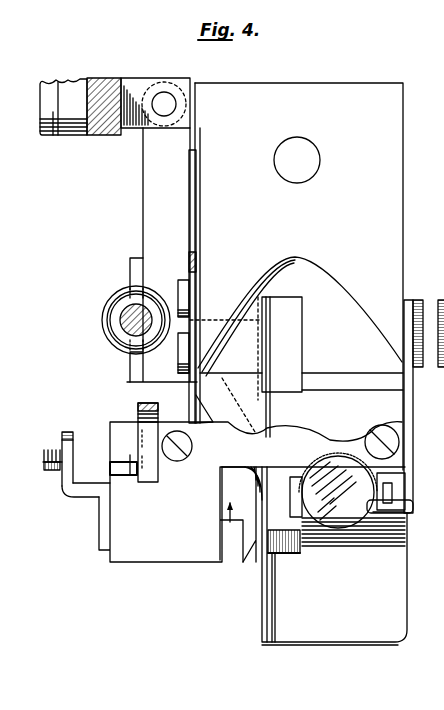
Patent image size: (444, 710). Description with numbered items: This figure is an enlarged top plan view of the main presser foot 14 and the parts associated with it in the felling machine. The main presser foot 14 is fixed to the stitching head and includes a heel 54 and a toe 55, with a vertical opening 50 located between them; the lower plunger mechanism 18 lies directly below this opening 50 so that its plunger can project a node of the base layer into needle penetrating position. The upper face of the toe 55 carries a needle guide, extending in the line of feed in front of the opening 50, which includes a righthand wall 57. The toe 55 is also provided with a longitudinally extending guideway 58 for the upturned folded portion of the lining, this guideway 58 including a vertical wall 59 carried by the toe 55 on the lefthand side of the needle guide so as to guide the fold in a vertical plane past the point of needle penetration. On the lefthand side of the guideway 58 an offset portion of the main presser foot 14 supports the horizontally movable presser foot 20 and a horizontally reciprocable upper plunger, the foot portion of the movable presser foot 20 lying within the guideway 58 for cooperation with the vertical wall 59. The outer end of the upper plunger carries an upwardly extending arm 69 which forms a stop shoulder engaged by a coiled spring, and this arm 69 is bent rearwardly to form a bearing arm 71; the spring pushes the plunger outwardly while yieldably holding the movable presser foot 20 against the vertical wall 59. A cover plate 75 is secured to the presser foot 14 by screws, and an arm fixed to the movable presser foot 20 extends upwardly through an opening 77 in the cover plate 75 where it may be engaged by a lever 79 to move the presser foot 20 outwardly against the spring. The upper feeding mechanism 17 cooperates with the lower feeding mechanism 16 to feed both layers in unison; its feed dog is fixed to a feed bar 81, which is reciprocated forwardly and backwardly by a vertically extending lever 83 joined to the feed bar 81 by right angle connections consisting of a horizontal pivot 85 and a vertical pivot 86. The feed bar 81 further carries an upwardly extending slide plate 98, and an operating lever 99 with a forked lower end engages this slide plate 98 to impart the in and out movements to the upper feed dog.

The main presser foot 14 is at (228, 187).
The lower feeding mechanism 16 is at (376, 432).
The upper feeding mechanism 17 is at (113, 294).
The lower plunger mechanism 18 is at (128, 466).
The movable presser foot 20 is at (232, 522).
The vertical opening 50 is at (285, 520).
The heel 54 is at (386, 161).
The toe 55 is at (384, 630).
The righthand wall 57 is at (286, 545).
The guideway 58 is at (254, 562).
The vertical wall 59 is at (262, 633).
The upwardly extending arm 69 is at (98, 494).
The bearing arm 71 is at (110, 423).
The cover plate 75 is at (147, 545).
The opening 77 is at (139, 475).
The lever 79 is at (181, 421).
The feed bar 81 is at (151, 227).
The vertically extending lever 83 is at (108, 79).
The horizontal pivot 85 is at (54, 113).
The vertical pivot 86 is at (166, 100).
The slide plate 98 is at (134, 364).
The operating lever 99 is at (122, 321).